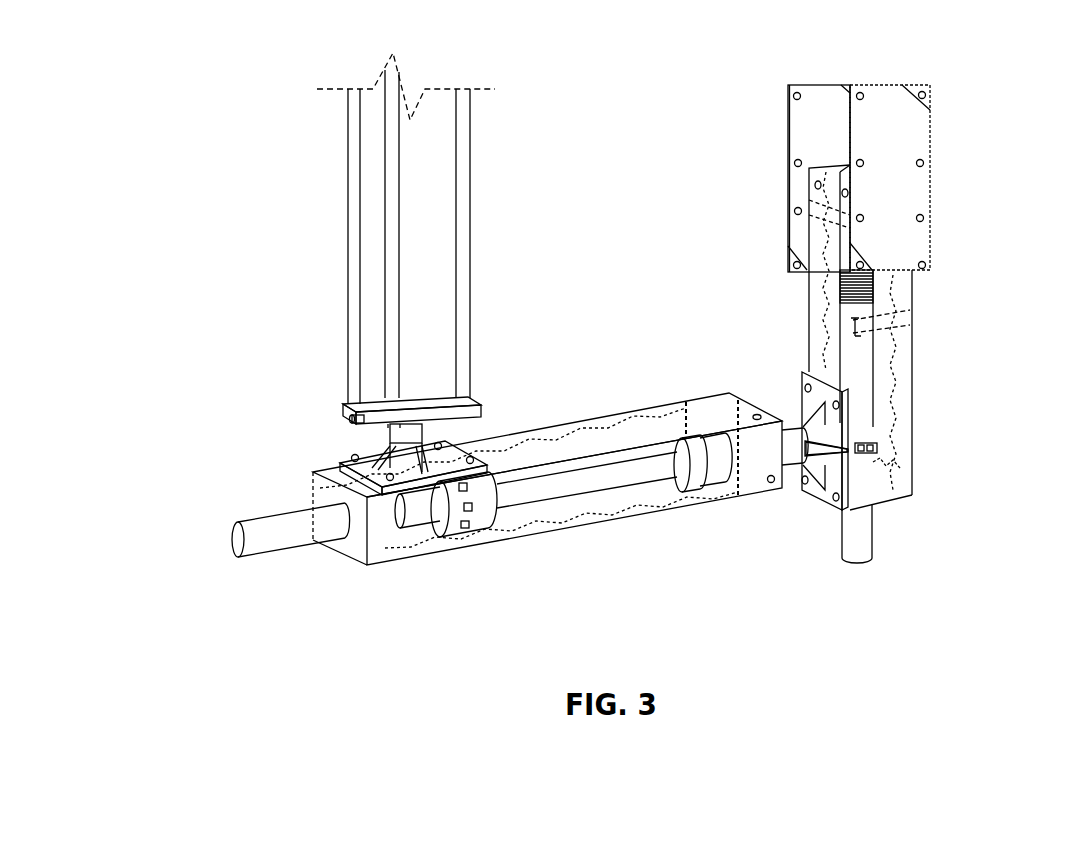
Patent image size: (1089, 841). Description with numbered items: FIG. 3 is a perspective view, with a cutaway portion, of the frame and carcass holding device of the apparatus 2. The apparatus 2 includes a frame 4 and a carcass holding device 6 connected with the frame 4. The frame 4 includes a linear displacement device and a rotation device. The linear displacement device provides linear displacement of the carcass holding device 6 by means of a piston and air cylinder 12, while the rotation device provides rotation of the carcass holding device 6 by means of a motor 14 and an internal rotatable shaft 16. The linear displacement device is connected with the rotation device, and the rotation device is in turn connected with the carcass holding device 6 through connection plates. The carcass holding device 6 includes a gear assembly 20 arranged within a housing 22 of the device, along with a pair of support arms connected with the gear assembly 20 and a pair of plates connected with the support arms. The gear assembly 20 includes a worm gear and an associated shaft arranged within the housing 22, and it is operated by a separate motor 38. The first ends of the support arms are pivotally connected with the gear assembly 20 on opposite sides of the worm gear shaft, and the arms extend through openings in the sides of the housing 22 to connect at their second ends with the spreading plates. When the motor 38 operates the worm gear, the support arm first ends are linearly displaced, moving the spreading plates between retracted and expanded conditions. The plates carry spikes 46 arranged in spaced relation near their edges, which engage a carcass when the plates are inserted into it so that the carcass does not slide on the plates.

The apparatus 2 is at (643, 192).
The frame 4 is at (285, 233).
The carcass holding device 6 is at (955, 323).
The piston and air cylinder 12 is at (432, 318).
The motor 14 is at (235, 537).
The internal rotatable shaft 16 is at (555, 485).
The gear assembly 20 is at (905, 410).
The housing 22 is at (810, 195).
The motor 38 is at (860, 533).
The spikes 46 is at (935, 93).